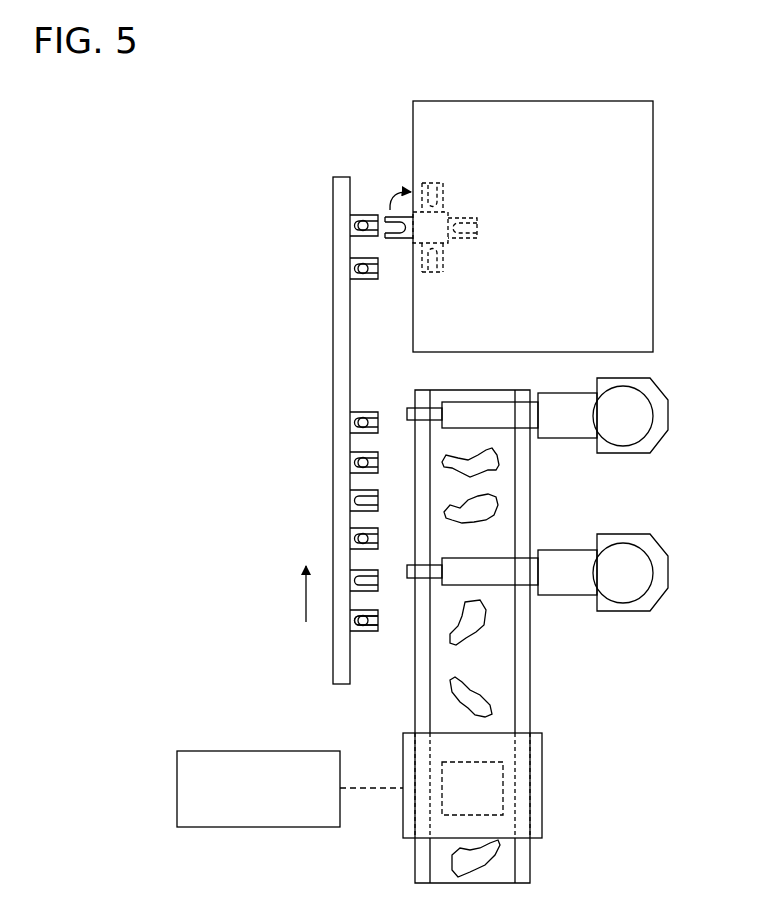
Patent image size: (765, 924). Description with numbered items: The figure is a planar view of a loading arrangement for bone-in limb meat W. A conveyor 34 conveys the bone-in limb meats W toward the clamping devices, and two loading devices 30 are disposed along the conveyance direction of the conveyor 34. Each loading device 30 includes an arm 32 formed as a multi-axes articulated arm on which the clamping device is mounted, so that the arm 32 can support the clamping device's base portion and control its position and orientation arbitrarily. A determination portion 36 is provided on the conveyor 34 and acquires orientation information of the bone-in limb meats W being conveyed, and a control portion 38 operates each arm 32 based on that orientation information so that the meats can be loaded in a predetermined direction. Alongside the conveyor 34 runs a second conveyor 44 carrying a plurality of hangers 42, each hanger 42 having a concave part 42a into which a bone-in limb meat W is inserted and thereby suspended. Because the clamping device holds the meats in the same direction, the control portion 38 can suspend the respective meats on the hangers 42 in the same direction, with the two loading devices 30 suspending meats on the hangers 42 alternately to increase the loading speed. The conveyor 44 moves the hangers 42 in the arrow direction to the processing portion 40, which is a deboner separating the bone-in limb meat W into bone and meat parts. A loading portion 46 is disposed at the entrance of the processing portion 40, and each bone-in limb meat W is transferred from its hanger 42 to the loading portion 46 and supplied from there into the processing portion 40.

The loading device 30 is at (670, 442).
The arm 32 is at (492, 420).
The conveyor 34 is at (530, 678).
The determination portion 36 is at (542, 800).
The control portion 38 is at (263, 751).
The processing portion 40 is at (541, 101).
The hanger 42 is at (361, 632).
The concave part 42a is at (378, 621).
The conveyor 44 is at (337, 400).
The loading portion 46 is at (437, 186).
The bone-in limb meat W is at (365, 410).